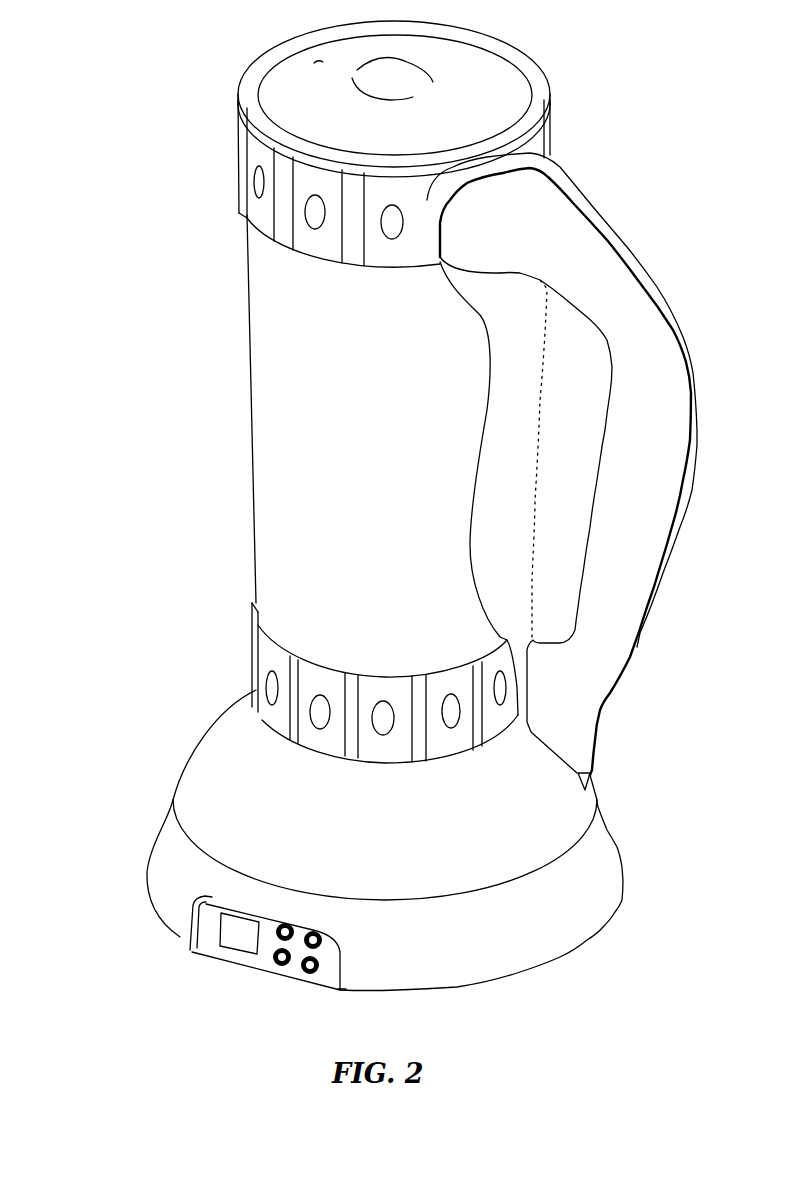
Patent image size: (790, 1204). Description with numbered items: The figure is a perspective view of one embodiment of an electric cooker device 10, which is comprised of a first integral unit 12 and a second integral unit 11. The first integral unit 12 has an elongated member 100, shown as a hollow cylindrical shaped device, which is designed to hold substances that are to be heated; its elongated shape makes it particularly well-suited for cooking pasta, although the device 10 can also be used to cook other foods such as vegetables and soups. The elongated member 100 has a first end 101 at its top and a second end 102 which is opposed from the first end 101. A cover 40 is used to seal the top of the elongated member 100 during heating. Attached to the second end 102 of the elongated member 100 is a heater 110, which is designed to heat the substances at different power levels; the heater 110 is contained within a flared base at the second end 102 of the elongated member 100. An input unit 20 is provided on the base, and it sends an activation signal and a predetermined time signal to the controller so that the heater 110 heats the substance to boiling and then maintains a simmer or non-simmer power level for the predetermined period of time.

The electric cooker device 10 is at (124, 58).
The elongated member 100 is at (236, 391).
The cover 40 is at (510, 70).
The first end 101 is at (243, 163).
The first integral unit 12 is at (248, 527).
The second end 102 is at (248, 662).
The heater 110 is at (595, 788).
The second integral unit 11 is at (602, 877).
The input unit 20 is at (212, 950).